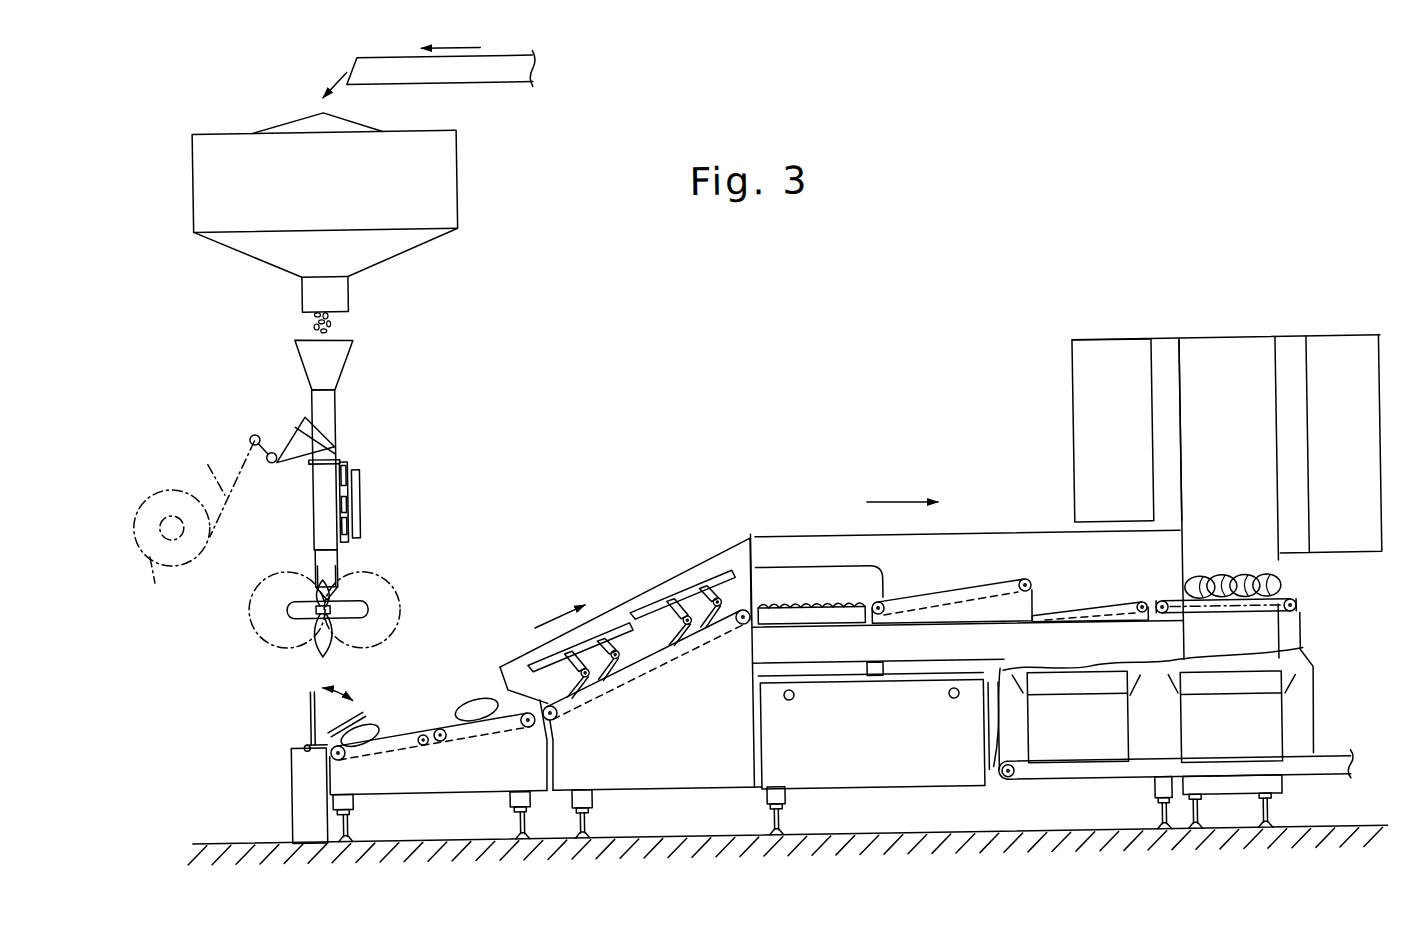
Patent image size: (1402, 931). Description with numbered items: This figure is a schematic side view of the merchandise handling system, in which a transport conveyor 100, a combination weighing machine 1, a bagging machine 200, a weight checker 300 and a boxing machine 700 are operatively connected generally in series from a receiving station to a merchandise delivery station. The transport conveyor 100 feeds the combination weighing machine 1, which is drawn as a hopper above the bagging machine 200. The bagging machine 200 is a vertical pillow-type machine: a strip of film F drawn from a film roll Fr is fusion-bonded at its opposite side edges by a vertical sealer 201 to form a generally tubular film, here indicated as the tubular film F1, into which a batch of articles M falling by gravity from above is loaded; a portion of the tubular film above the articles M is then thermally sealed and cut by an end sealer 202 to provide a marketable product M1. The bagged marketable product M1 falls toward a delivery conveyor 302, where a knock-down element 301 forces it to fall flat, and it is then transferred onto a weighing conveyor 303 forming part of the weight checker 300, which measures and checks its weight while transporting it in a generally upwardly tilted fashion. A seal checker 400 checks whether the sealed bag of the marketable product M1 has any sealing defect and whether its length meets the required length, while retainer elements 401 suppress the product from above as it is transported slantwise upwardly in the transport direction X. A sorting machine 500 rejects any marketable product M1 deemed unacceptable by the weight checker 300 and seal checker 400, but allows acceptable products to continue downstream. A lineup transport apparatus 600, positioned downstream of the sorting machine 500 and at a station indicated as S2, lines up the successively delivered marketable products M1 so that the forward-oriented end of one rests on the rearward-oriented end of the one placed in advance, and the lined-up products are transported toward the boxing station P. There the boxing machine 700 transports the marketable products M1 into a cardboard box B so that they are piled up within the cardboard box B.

The combination weighing machine 1 is at (450, 176).
The transport conveyor 100 is at (505, 82).
The bagging machine 200 is at (382, 323).
The vertical sealer 201 is at (354, 498).
The end sealer 202 is at (315, 599).
The weight checker 300 is at (456, 679).
The knock-down element 301 is at (306, 719).
The delivery conveyor 302 is at (396, 728).
The weighing conveyor 303 is at (441, 728).
The seal checker 400 is at (719, 628).
The retainer elements 401 is at (680, 593).
The sorting machine 500 is at (803, 521).
The lineup transport apparatus 600 is at (1019, 527).
The boxing machine 700 is at (1248, 320).
The articles M is at (314, 324).
The film F is at (224, 484).
The film roll Fr is at (172, 551).
The tubular film F1 is at (343, 591).
The marketable product M1 is at (319, 639).
The second station S2 is at (868, 414).
The conveying direction X is at (611, 537).
The boxing station P is at (1241, 558).
The cardboard box B is at (1271, 732).